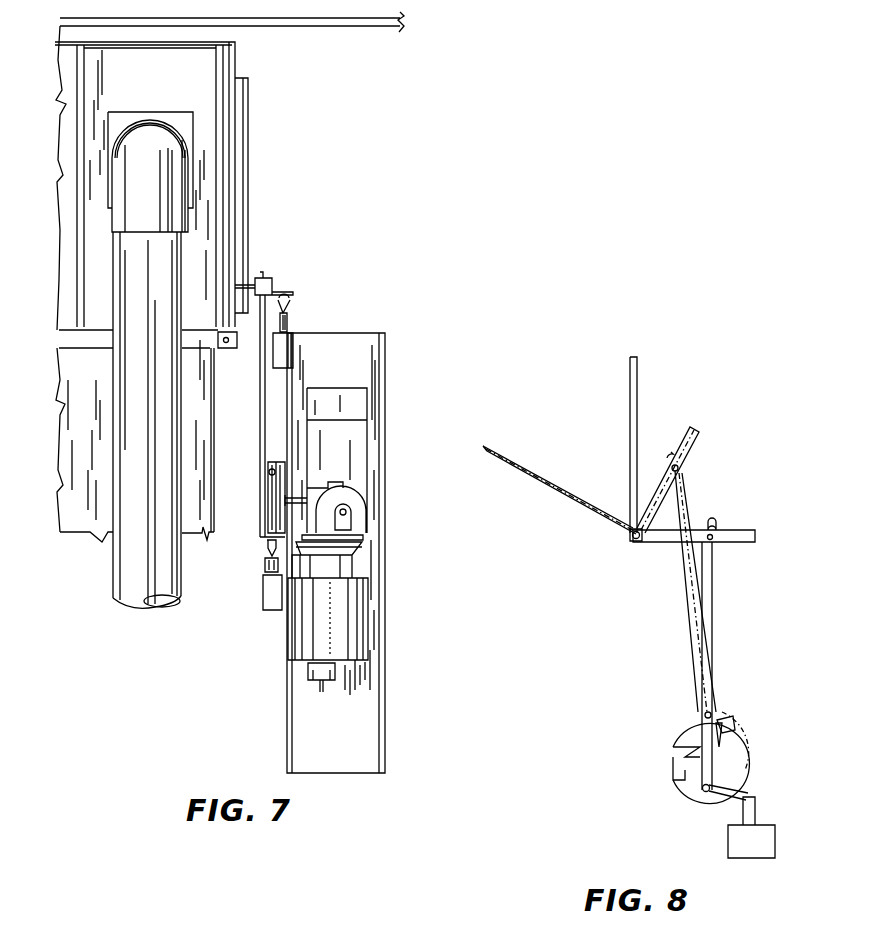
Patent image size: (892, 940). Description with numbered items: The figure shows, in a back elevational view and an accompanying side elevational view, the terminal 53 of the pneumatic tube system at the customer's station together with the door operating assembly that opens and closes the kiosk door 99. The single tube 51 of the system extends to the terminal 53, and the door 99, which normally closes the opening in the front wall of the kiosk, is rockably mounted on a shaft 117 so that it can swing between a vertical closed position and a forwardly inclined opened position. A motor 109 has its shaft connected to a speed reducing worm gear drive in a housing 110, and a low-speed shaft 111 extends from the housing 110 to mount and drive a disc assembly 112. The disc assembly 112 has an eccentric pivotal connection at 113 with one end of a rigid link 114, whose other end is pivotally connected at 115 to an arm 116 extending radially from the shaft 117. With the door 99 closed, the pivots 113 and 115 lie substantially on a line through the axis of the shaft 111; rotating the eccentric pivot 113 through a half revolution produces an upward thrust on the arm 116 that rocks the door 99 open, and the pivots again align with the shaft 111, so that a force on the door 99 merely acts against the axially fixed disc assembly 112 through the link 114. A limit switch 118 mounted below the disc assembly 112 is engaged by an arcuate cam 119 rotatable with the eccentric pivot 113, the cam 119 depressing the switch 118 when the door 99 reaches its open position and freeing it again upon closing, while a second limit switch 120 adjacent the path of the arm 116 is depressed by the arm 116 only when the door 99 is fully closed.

In FIG. 7, the tube 51 is at (178, 573).
In FIG. 7, the terminal 53 is at (248, 118).
In FIG. 8, the door 99 is at (630, 397).
In FIG. 7, the motor 109 is at (295, 655).
In FIG. 7, the housing 110 is at (355, 505).
In FIG. 7, the shaft 111 is at (300, 496).
In FIG. 8, the disc assembly 112 is at (740, 765).
In FIG. 8, the eccentric pivotal connection 113 is at (700, 790).
In FIG. 7, the rigid link 114 is at (258, 357).
In FIG. 8, the rigid link 114 is at (713, 597).
In FIG. 8, the pivotal connection 115 is at (712, 543).
In FIG. 7, the arm 116 is at (272, 283).
In FIG. 8, the arm 116 is at (740, 530).
In FIG. 7, the shaft 117 is at (240, 283).
In FIG. 8, the shaft 117 is at (633, 540).
In FIG. 7, the limit switch 118 is at (272, 592).
In FIG. 8, the limit switch 118 is at (735, 835).
In FIG. 7, the arcuate cam 119 is at (272, 468).
In FIG. 8, the arcuate cam 119 is at (683, 730).
In FIG. 7, the second limit switch 120 is at (275, 365).